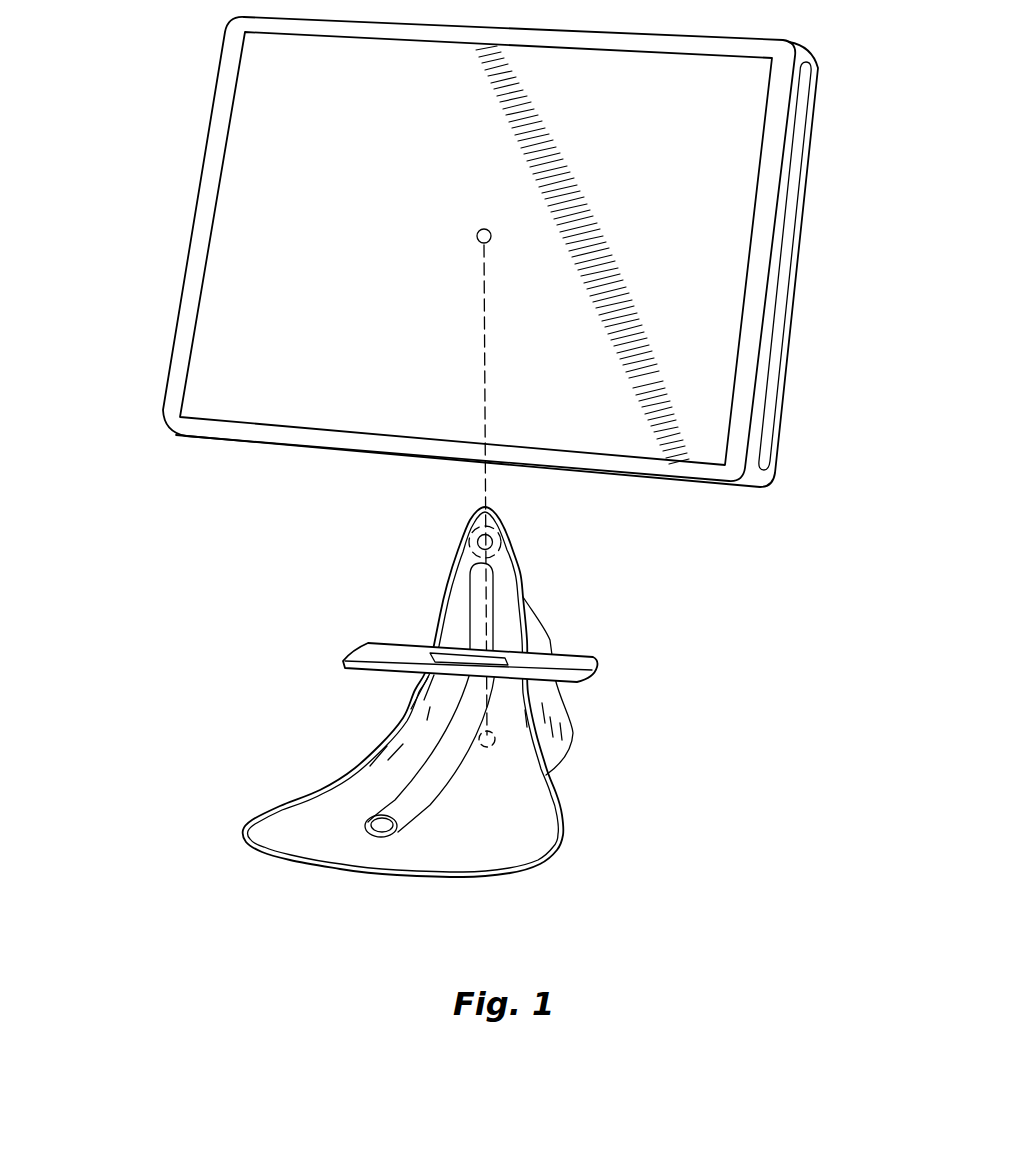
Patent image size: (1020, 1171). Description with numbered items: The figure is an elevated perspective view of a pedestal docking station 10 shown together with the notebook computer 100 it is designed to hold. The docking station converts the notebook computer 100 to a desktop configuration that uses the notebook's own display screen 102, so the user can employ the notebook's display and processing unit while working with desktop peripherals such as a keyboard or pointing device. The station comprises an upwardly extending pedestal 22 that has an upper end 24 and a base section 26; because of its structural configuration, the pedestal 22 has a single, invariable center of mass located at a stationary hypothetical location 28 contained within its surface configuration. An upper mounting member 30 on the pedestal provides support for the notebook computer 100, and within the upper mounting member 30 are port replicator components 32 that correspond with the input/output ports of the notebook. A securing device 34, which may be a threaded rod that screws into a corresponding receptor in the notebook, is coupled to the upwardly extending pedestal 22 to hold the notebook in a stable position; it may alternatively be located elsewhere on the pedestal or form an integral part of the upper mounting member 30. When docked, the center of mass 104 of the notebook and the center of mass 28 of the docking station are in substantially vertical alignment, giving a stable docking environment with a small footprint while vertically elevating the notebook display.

The pedestal docking station 10 is at (359, 682).
The upwardly extending pedestal 22 is at (553, 703).
The upper end 24 is at (517, 540).
The base section 26 is at (558, 858).
The center of mass 28 is at (480, 737).
The upper mounting member 30 is at (517, 630).
The port replicator components 32 is at (430, 653).
The securing device 34 is at (472, 536).
The notebook computer 100 is at (490, 376).
The display screen 102 is at (710, 185).
The center of mass of the notebook 104 is at (477, 238).